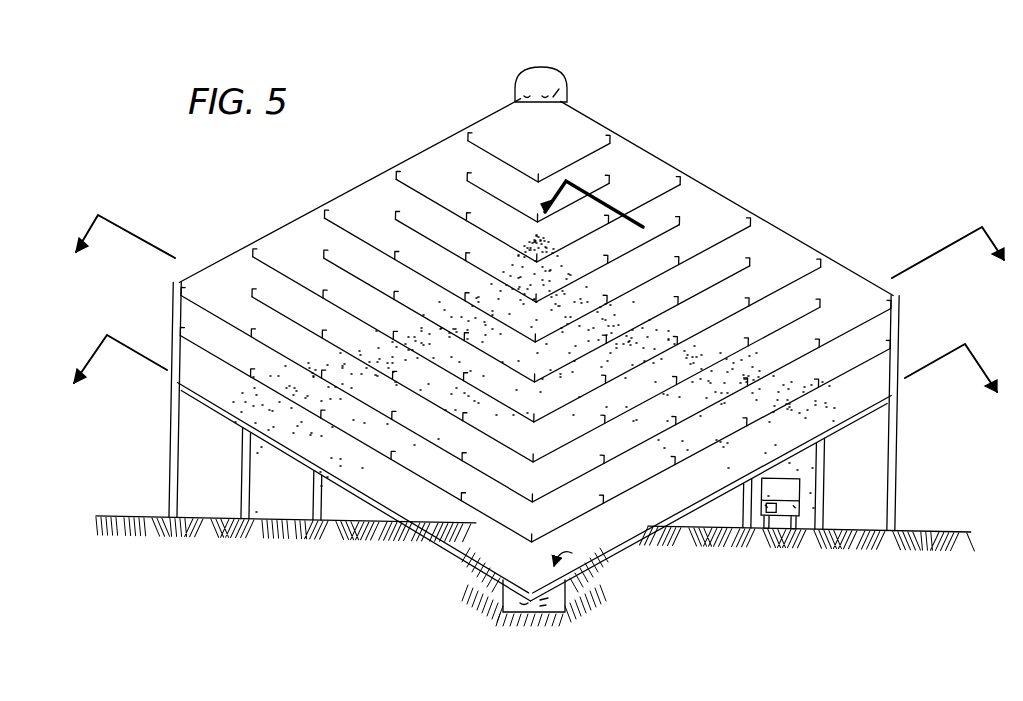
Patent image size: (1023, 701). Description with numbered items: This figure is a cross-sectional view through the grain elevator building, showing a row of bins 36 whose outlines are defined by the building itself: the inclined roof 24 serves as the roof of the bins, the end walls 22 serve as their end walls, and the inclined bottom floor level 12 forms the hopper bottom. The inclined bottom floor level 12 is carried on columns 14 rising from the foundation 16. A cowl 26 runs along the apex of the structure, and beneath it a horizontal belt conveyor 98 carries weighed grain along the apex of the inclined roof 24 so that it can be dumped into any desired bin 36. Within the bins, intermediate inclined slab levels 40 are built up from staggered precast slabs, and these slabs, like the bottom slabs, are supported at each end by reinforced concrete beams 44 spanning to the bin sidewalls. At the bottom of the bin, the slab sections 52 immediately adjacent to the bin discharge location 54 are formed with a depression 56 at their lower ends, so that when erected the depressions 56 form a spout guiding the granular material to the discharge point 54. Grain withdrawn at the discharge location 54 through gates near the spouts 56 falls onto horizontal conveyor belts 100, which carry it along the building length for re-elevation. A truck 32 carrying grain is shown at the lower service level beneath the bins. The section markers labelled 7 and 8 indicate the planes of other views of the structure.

The inclined bottom floor level 12 is at (355, 470).
The columns 14 is at (243, 472).
The foundation 16 is at (213, 518).
The end walls 22 is at (176, 306).
The inclined roof 24 is at (808, 242).
The cowl 26 is at (531, 66).
The truck 32 is at (858, 515).
The bins 36 is at (422, 306).
The intermediate inclined slab levels 40 is at (631, 210).
The reinforced concrete beams 44 is at (684, 226).
The slab sections 52 is at (473, 537).
The bin discharge location 54 is at (510, 595).
The depression 56 is at (582, 562).
The horizontal belt conveyor 98 is at (557, 86).
The horizontal conveyor belts 100 is at (580, 596).
The section 7 marker 7 is at (536, 253).
The section 8 marker 8 is at (529, 375).